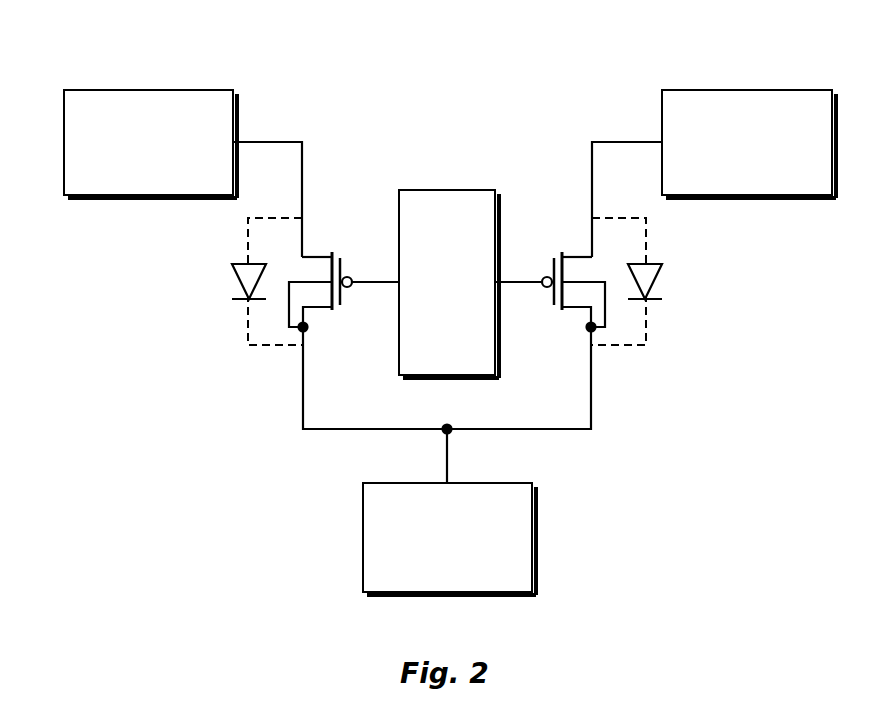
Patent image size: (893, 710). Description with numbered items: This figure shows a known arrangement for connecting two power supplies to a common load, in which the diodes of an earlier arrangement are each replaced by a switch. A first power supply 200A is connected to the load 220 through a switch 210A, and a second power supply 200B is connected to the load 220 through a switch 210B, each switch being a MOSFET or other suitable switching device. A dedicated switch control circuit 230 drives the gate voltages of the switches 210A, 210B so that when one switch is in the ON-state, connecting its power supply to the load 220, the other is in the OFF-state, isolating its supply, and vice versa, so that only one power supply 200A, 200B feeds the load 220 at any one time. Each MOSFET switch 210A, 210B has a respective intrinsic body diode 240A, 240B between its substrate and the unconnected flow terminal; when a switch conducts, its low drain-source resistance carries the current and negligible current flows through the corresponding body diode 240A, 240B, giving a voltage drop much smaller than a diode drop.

The power supply 200A is at (147, 88).
The power supply 200B is at (743, 88).
The switch 210A is at (317, 308).
The switch 210B is at (577, 308).
The load 220 is at (536, 532).
The switch control circuit 230 is at (445, 188).
The intrinsic body diode 240A is at (237, 280).
The intrinsic body diode 240B is at (657, 280).